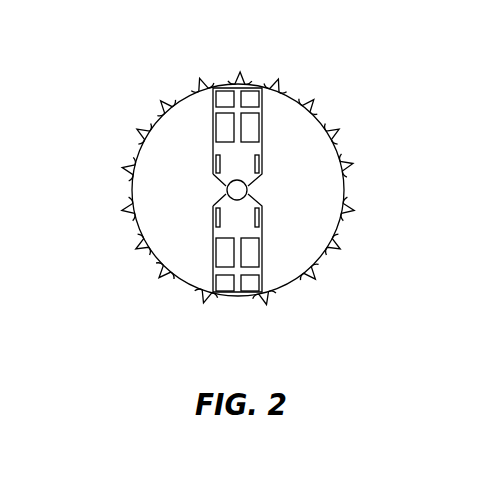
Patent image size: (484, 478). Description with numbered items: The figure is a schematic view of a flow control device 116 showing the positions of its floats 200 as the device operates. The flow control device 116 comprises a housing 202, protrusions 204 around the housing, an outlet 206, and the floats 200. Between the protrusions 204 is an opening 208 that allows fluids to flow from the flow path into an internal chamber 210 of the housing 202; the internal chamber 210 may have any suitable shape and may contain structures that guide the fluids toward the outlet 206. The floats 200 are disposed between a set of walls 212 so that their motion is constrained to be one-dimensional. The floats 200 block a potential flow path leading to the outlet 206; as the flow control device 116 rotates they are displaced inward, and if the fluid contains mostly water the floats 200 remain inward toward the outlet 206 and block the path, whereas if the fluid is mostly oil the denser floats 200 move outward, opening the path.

The flow control device 116 is at (118, 317).
The floats 200 is at (252, 85).
The housing 202 is at (133, 188).
The protrusions 204 is at (122, 168).
The outlet 206 is at (247, 190).
The opening 208 is at (183, 100).
The internal chamber 210 is at (167, 138).
The walls 212 is at (212, 240).